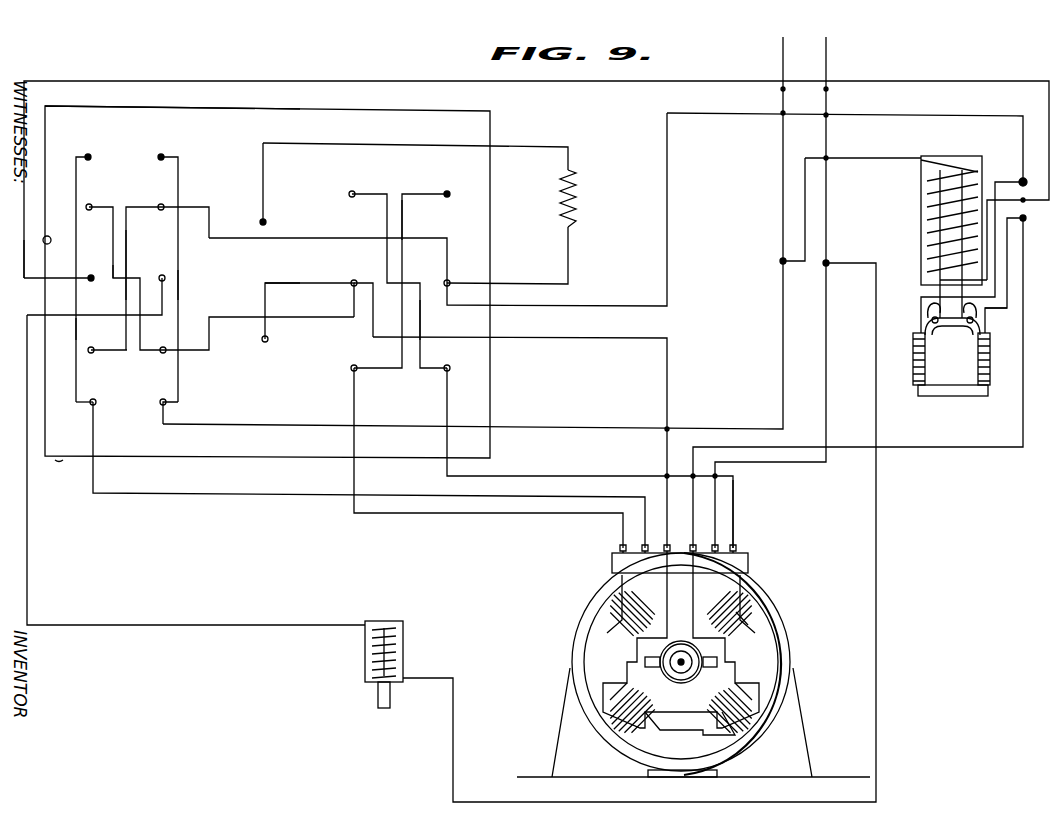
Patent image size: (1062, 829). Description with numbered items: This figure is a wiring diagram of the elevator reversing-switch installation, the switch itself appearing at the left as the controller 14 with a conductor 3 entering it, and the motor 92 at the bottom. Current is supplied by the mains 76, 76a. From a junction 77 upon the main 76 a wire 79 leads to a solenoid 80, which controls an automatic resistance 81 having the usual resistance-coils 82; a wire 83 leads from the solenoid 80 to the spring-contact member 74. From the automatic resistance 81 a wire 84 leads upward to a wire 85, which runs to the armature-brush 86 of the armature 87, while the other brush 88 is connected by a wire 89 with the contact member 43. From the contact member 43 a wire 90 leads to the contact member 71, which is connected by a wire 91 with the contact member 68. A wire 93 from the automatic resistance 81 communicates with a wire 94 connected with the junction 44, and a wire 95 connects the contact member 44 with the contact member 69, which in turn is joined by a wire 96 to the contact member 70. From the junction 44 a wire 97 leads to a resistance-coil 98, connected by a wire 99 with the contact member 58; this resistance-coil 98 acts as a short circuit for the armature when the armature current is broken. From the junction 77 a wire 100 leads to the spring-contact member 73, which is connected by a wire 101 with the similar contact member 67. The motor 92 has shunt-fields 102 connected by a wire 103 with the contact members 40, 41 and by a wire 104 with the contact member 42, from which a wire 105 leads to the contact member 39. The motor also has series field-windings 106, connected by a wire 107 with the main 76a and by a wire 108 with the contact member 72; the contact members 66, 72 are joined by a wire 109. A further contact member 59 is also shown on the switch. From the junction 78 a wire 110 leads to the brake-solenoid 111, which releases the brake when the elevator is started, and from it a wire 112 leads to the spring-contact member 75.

The conductor 3 is at (24, 256).
The controller 14 is at (172, 125).
The contact member 39 is at (447, 191).
The contact member 40 is at (354, 191).
The contact member 41 is at (449, 366).
The contact member 42 is at (351, 369).
The contact member 43 is at (352, 280).
The junction 44 is at (450, 281).
The contact member 58 is at (261, 222).
The contact 59 is at (265, 343).
The contact member 66 is at (88, 153).
The contact member 67 is at (161, 153).
The contact member 68 is at (90, 204).
The contact member 69 is at (161, 204).
The contact member 70 is at (91, 353).
The contact member 71 is at (163, 353).
The contact member 72 is at (96, 403).
The spring-contact member 73 is at (161, 406).
The spring-contact member 74 is at (91, 275).
The spring-contact member 75 is at (162, 275).
The main 76 is at (783, 58).
The main 76a is at (826, 57).
The junction 77 is at (780, 264).
The junction 78 is at (829, 266).
The wire 79 is at (855, 160).
The solenoid 80 is at (927, 226).
The automatic resistance 81 is at (926, 356).
The resistance-coils 82 is at (991, 356).
The wire 83 is at (1026, 181).
The wire 84 is at (997, 310).
The wire 85 is at (922, 446).
The armature-brush 86 is at (710, 668).
The armature 87 is at (677, 676).
The brush 88 is at (652, 668).
The wire 89 is at (545, 338).
The wire 90 is at (290, 317).
The wire 91 is at (116, 272).
The motor 92 is at (693, 722).
The wire 93 is at (1027, 218).
The wire 94 is at (877, 116).
The wire 95 is at (327, 238).
The wire 96 is at (127, 232).
The wire 97 is at (522, 283).
The resistance-coil 98 is at (577, 200).
The wire 99 is at (395, 143).
The wire 100 is at (783, 370).
The wire 101 is at (179, 285).
The shunt-fields 102 is at (735, 602).
The wire 103 is at (421, 317).
The wire 104 is at (505, 514).
The wire 105 is at (404, 215).
The series field-windings 106 is at (736, 621).
The wire 107 is at (827, 383).
The wire 108 is at (262, 493).
The wire 109 is at (77, 327).
The wire 110 is at (877, 533).
The brake-solenoid 111 is at (288, 281).
The wire 112 is at (118, 625).